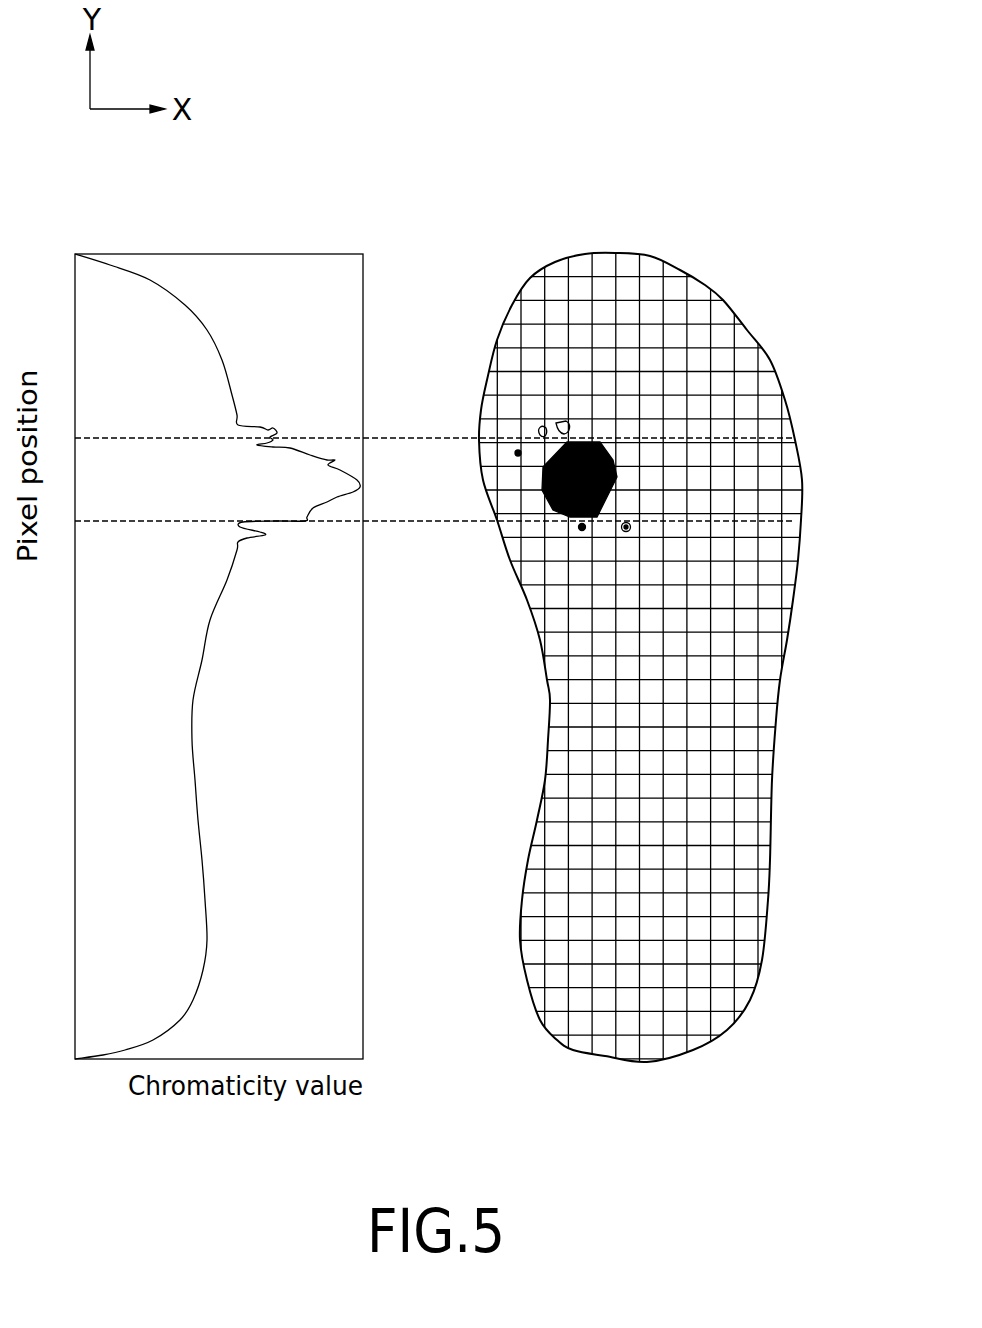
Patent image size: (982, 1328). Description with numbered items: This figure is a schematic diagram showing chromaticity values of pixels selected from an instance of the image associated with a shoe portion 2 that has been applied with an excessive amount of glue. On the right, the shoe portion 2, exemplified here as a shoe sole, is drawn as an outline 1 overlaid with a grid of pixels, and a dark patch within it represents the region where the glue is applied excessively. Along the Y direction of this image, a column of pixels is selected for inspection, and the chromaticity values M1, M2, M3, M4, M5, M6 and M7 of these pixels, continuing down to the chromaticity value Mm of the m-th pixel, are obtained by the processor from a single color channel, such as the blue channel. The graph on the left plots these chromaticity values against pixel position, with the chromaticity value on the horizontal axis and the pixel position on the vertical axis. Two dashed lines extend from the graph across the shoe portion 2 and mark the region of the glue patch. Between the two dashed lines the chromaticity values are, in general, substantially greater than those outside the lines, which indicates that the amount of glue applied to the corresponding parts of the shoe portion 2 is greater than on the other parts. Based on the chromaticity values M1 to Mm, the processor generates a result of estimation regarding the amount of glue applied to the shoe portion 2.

The shoe sole image 1 is at (557, 689).
The shoe portion 2 is at (677, 268).
The chromaticity value M1 is at (582, 270).
The chromaticity value M2 is at (575, 293).
The chromaticity value M3 is at (582, 316).
The chromaticity value M4 is at (577, 338).
The chromaticity value M5 is at (578, 362).
The chromaticity value M6 is at (575, 384).
The chromaticity value M7 is at (583, 407).
The chromaticity value Mm is at (587, 1038).